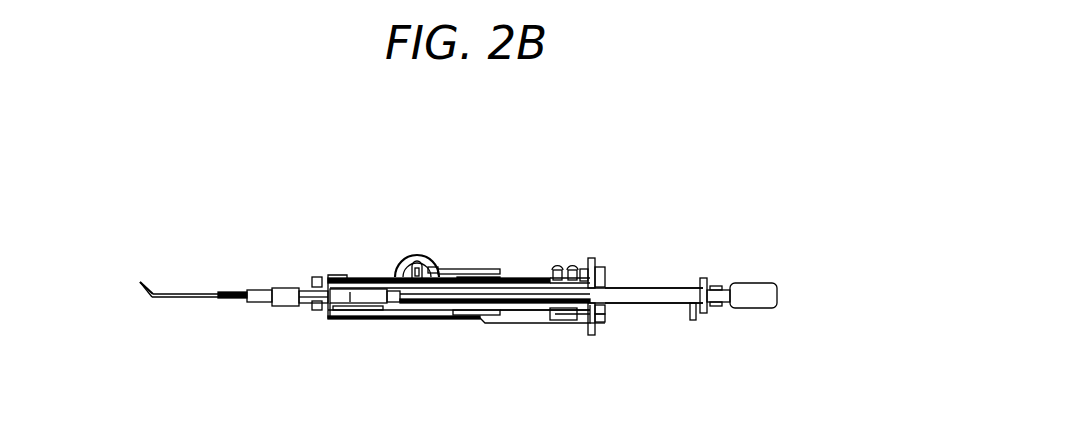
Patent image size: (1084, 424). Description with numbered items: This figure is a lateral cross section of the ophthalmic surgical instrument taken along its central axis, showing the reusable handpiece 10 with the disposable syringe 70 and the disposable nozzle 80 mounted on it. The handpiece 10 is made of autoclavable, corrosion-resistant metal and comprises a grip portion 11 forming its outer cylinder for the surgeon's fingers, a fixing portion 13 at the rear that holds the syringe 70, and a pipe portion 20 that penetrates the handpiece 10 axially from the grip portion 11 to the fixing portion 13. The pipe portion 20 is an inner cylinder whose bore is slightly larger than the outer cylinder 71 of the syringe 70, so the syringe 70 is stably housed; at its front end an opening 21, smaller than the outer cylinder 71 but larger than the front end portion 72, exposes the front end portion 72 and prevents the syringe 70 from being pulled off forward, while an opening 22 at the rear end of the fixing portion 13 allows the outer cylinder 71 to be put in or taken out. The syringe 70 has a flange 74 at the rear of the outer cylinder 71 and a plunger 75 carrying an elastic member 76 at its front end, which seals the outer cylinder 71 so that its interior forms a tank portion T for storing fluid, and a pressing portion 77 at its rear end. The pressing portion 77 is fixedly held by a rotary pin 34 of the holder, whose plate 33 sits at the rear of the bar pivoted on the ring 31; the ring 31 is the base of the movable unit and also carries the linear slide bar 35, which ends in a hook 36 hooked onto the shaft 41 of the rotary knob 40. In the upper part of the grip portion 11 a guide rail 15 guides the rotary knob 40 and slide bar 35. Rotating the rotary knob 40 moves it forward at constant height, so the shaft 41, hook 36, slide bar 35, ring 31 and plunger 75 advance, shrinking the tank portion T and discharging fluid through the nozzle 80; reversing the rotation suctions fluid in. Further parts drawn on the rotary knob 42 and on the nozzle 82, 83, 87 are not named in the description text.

The handpiece 10 is at (470, 178).
The grip portion 11 is at (476, 320).
The fixing portion 13 is at (605, 322).
The guide rail 15 is at (358, 282).
The pipe portion 20 is at (423, 312).
The opening 21 is at (326, 282).
The opening 22 is at (605, 312).
The ring 31 is at (560, 320).
The plate 33 is at (692, 321).
The rotary pin 34 is at (748, 310).
The slide bar 35 is at (466, 262).
The hook 36 is at (432, 256).
The rotary knob 40 is at (401, 211).
The shaft 41 is at (404, 260).
The knob ring 42 is at (413, 254).
The syringe 70 is at (527, 300).
The outer cylinder 71 is at (341, 304).
The front end portion 72 is at (305, 313).
The flange 74 is at (593, 258).
The plunger 75 is at (636, 290).
The elastic member 76 is at (401, 320).
The pressing portion 77 is at (703, 280).
The nozzle 80 is at (170, 258).
The tube 82 is at (181, 299).
The tube end hook 83 is at (141, 297).
The lug 87 is at (315, 279).
The tank portion T is at (352, 300).